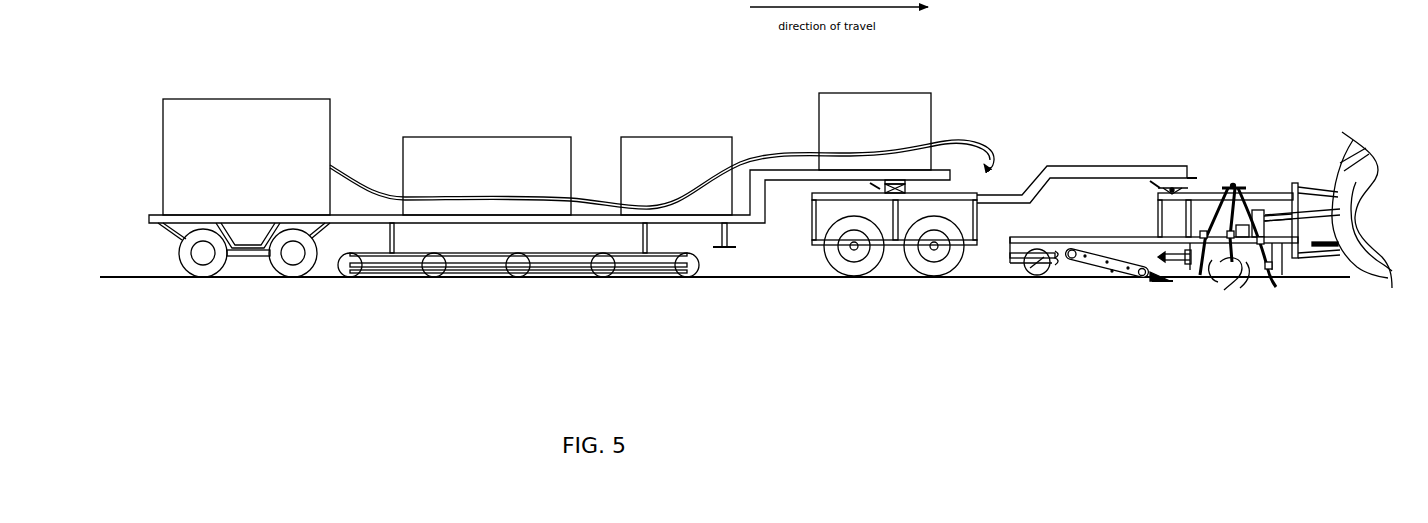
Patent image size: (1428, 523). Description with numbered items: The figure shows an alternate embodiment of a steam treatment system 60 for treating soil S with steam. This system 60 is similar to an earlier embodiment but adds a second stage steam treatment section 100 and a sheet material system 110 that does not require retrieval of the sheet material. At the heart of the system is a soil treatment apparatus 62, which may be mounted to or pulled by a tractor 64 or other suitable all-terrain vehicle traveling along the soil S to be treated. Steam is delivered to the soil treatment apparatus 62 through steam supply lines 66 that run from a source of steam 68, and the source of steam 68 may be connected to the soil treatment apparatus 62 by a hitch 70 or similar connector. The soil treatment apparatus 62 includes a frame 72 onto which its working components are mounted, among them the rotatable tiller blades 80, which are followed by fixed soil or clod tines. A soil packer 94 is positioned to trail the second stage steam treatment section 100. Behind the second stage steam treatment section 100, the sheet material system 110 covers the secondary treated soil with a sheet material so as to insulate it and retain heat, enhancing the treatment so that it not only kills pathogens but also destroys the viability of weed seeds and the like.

The source of steam 68 is at (663, 87).
The sheet material system 110 is at (518, 294).
The steam treatment system 60 is at (1160, 87).
The hitch 70 is at (1160, 190).
The second stage steam treatment section 100 is at (1154, 274).
The soil packer 94 is at (1028, 243).
The steam supply lines 66 is at (1252, 151).
The frame 72 is at (1281, 102).
The soil treatment apparatus 62 is at (1318, 156).
The tractor 64 is at (1366, 184).
The rotatable tiller blades 80 is at (1238, 251).
The soil S is at (1345, 327).